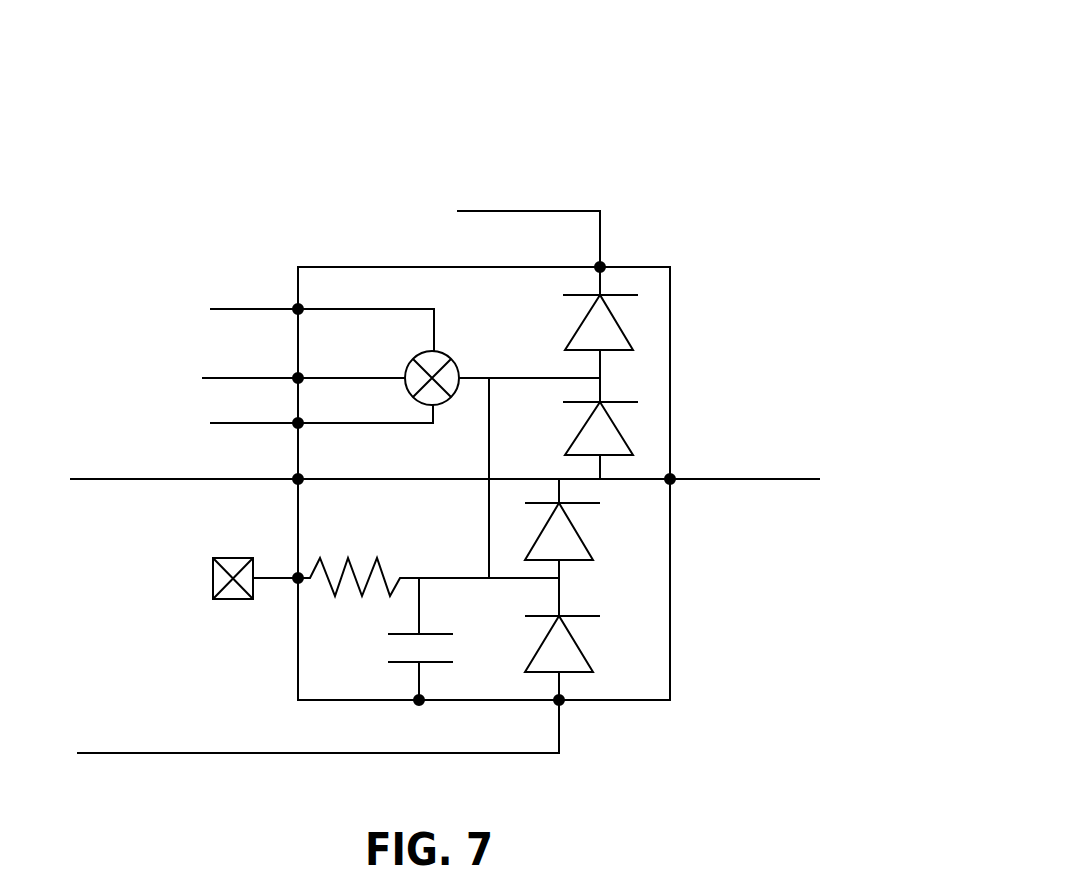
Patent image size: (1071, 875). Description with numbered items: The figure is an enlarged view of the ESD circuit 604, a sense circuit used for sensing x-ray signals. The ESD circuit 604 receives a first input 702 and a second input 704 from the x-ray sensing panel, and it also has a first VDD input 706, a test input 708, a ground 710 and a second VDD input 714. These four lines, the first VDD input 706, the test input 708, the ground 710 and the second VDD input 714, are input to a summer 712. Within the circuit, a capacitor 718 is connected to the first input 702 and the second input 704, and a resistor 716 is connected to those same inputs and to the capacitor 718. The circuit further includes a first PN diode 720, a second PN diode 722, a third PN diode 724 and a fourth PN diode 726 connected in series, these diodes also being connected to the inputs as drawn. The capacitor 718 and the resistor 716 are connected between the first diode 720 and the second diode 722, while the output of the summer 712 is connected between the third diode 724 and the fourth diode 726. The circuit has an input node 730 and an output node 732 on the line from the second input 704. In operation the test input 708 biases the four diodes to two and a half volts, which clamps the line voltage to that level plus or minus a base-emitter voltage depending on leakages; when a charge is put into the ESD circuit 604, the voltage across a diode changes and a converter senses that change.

The ESD circuit 604 is at (606, 112).
The first input 702 is at (103, 753).
The second input 704 is at (84, 479).
The first VDD input 706 is at (210, 309).
The test input 708 is at (202, 378).
The ground 710 is at (210, 423).
The summer 712 is at (448, 354).
The second VDD input 714 is at (457, 211).
The resistor 716 is at (349, 559).
The capacitor 718 is at (435, 633).
The first PN diode 720 is at (583, 641).
The second PN diode 722 is at (582, 532).
The third PN diode 724 is at (622, 433).
The fourth PN diode 726 is at (622, 328).
The input node 730 is at (293, 487).
The output node 732 is at (673, 483).